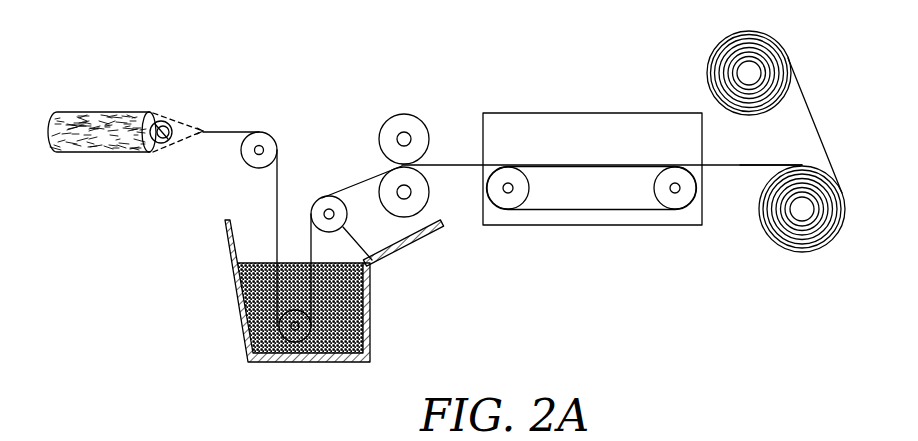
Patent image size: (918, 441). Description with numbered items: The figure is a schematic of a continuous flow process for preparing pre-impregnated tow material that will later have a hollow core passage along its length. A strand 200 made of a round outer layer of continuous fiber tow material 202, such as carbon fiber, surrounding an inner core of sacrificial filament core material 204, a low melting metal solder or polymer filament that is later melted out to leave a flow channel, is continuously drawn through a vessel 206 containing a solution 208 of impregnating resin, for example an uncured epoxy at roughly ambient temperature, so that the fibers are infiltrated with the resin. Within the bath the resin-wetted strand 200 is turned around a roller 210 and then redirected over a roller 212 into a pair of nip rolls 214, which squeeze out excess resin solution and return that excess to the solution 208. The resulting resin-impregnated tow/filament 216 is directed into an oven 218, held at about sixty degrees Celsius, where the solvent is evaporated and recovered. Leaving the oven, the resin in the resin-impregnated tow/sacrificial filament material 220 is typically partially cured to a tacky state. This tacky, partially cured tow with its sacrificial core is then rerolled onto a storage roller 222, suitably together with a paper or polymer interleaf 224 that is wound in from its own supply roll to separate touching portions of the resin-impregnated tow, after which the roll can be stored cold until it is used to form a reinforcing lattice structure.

The strand 200 is at (226, 130).
The continuous fiber tow material 202 is at (127, 112).
The sacrificial filament core material 204 is at (175, 148).
The vessel 206 is at (232, 265).
The solution of impregnating resin 208 is at (343, 318).
The roller 210 is at (280, 328).
The roller 212 is at (377, 261).
The nip rolls 214 is at (387, 127).
The resin-impregnated tow/filament 216 is at (442, 165).
The oven 218 is at (592, 169).
The resin-impregnated tow/sacrificial filament material 220 is at (747, 166).
The roller 222 is at (773, 243).
The paper or polymer interleaf 224 is at (790, 52).